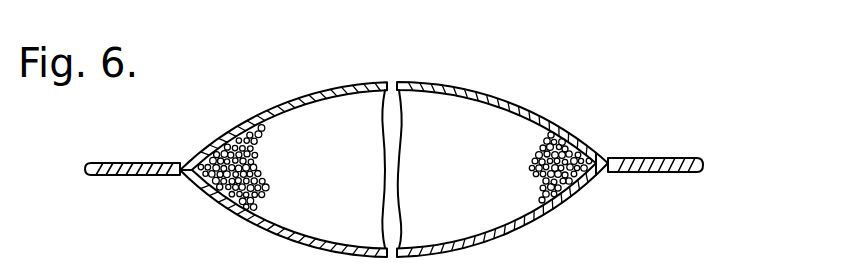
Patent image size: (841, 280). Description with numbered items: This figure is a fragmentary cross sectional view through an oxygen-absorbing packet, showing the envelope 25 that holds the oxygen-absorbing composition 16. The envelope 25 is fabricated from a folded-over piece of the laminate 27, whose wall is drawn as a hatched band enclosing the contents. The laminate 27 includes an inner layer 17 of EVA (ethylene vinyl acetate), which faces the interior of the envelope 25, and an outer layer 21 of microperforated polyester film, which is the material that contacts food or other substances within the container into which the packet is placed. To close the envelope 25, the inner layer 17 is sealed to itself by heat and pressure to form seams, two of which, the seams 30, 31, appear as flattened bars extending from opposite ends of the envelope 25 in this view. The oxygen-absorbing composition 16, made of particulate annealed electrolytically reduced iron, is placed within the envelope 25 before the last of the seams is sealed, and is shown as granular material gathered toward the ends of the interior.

The oxygen-absorbing composition 16 is at (254, 166).
The inner layer 17 is at (355, 248).
The outer layer 21 is at (411, 82).
The envelope 25 is at (273, 101).
The laminate 27 is at (505, 96).
The seam 30 is at (136, 161).
The seam 31 is at (662, 155).